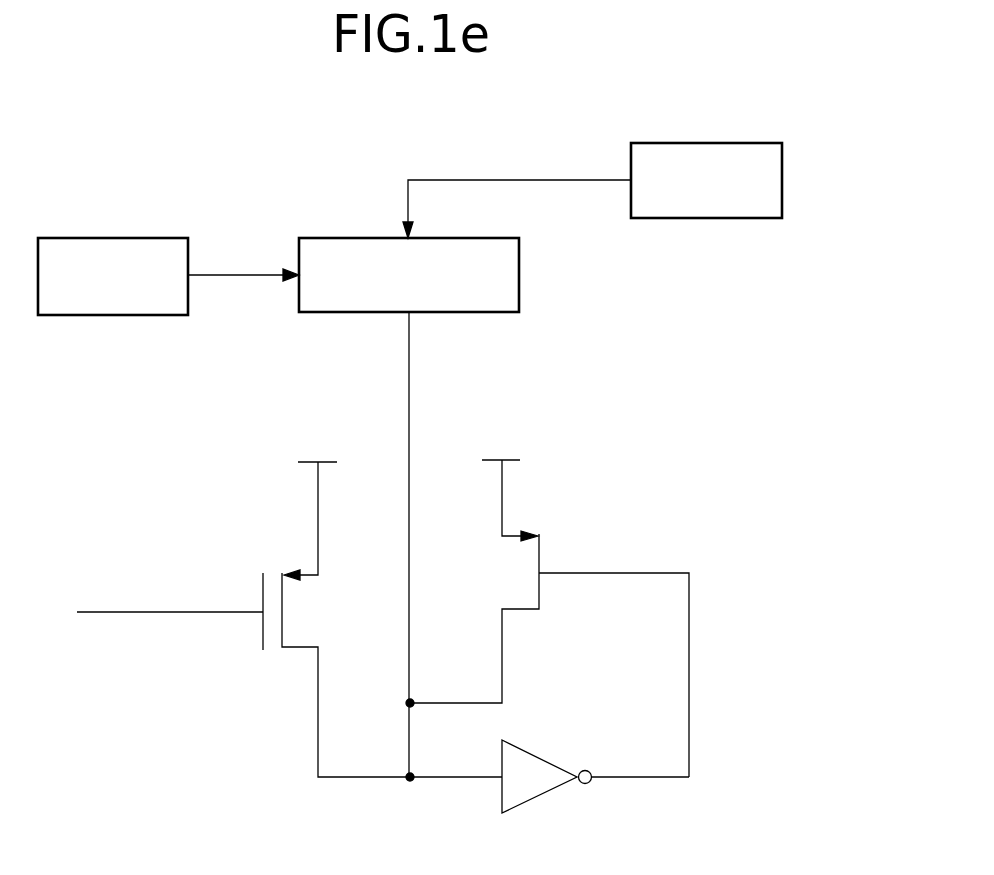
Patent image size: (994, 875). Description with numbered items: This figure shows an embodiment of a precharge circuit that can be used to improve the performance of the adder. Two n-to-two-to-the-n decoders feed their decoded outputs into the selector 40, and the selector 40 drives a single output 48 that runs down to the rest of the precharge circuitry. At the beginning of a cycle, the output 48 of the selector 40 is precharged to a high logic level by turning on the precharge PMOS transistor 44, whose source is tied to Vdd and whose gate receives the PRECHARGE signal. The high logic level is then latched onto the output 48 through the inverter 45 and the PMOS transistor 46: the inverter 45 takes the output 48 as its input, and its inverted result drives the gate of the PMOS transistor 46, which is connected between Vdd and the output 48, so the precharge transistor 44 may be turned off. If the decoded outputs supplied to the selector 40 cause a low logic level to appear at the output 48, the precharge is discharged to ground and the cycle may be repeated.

The selector 40 is at (519, 287).
The selector output 48 is at (410, 370).
The precharge PMOS transistor 44 is at (300, 650).
The PMOS transistor 46 is at (540, 553).
The inverter 45 is at (519, 805).